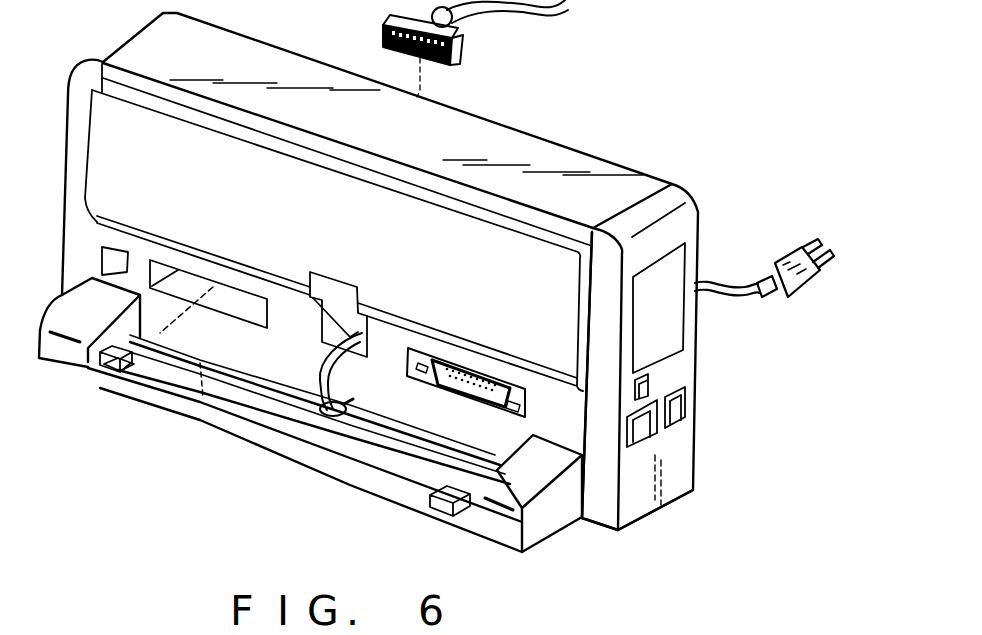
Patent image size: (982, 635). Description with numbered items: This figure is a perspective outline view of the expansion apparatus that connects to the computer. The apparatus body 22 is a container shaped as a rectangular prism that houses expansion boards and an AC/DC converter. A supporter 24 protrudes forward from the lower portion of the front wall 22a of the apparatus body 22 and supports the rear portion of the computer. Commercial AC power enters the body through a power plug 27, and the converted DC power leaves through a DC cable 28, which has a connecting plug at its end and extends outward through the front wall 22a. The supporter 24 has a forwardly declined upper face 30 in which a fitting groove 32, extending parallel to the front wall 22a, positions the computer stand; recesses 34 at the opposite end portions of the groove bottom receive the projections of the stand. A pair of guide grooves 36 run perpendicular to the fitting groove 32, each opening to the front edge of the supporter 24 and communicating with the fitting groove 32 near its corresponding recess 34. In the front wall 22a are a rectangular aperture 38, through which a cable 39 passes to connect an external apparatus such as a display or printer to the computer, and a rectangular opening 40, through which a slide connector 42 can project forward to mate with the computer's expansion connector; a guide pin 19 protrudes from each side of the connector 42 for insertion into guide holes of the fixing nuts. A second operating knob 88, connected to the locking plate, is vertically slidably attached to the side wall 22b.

The apparatus body 22 is at (592, 160).
The front wall 22a is at (97, 97).
The side wall 22b is at (652, 449).
The supporter 24 is at (573, 513).
The power plug 27 is at (797, 298).
The cable 39 is at (522, 13).
The slide connector 42 is at (422, 383).
The guide pin 19 is at (403, 383).
The rectangular opening 40 is at (515, 418).
The DC cable 28 is at (316, 436).
The fitting groove 32 is at (273, 408).
The upper face 30 is at (158, 398).
The rectangular aperture 38 is at (213, 413).
The recess 34 is at (88, 372).
The guide groove 36 is at (118, 380).
The second operating knob 88 is at (650, 400).